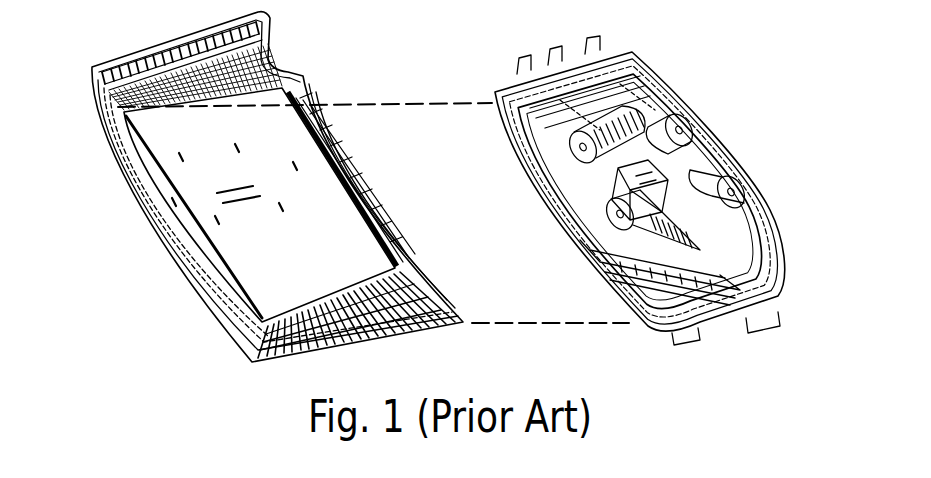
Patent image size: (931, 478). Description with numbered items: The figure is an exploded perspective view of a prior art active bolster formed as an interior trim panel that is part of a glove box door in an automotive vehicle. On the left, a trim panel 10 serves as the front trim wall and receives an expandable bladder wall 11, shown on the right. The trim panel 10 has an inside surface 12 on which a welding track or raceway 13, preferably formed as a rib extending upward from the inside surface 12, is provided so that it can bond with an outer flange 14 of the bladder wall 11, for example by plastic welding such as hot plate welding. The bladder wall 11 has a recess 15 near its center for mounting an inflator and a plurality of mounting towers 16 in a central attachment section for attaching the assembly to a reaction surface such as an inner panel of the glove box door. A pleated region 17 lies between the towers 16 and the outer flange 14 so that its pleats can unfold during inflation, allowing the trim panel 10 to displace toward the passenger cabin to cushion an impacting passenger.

The trim panel 10 is at (203, 307).
The bladder wall 11 is at (702, 110).
The inside surface 12 is at (170, 173).
The welding track or raceway 13 is at (383, 238).
The outer flange 14 is at (777, 283).
The recess 15 is at (647, 172).
The mounting towers 16 is at (723, 181).
The pleated region 17 is at (528, 98).